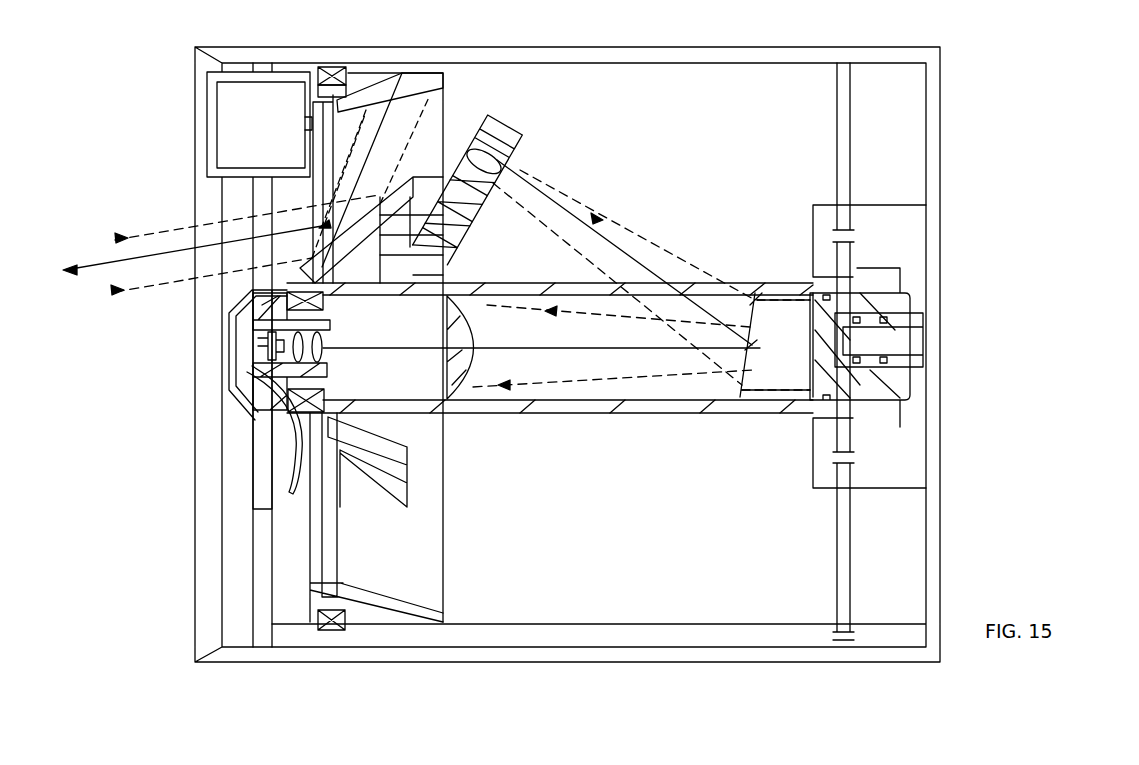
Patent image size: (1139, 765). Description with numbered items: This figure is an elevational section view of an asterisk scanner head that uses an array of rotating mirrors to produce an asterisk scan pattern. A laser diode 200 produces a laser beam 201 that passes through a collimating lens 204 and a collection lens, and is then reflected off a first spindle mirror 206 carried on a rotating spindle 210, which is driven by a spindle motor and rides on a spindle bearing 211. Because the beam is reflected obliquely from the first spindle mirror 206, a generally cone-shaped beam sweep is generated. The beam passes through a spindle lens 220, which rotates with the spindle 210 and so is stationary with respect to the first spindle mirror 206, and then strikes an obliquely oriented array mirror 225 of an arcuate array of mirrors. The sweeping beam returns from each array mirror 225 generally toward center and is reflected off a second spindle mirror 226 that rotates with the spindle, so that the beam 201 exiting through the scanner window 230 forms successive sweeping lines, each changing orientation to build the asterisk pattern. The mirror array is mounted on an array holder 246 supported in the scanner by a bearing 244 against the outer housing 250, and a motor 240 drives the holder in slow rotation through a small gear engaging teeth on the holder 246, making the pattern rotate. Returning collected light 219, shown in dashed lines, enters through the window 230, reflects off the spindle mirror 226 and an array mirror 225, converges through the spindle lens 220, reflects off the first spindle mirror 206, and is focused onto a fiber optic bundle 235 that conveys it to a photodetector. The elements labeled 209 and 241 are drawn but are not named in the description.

The laser diode 200 is at (256, 352).
The laser beam 201 is at (79, 275).
The collimating lens 204 is at (312, 352).
The first spindle mirror 206 is at (763, 358).
The support column 209 is at (899, 258).
The rotating spindle 210 is at (417, 444).
The spindle bearing 211 is at (309, 418).
The returning collected light 219 is at (154, 300).
The spindle lens 220 is at (487, 157).
The array mirror 225 is at (400, 90).
The spindle mirror 226 is at (411, 163).
The scanner window 230 is at (268, 481).
The fiber optic bundle 235 is at (290, 452).
The motor 240 is at (238, 121).
The bearing 241 is at (317, 97).
The bearing 244 is at (334, 74).
The array holder 246 is at (369, 84).
The outer housing 250 is at (478, 657).